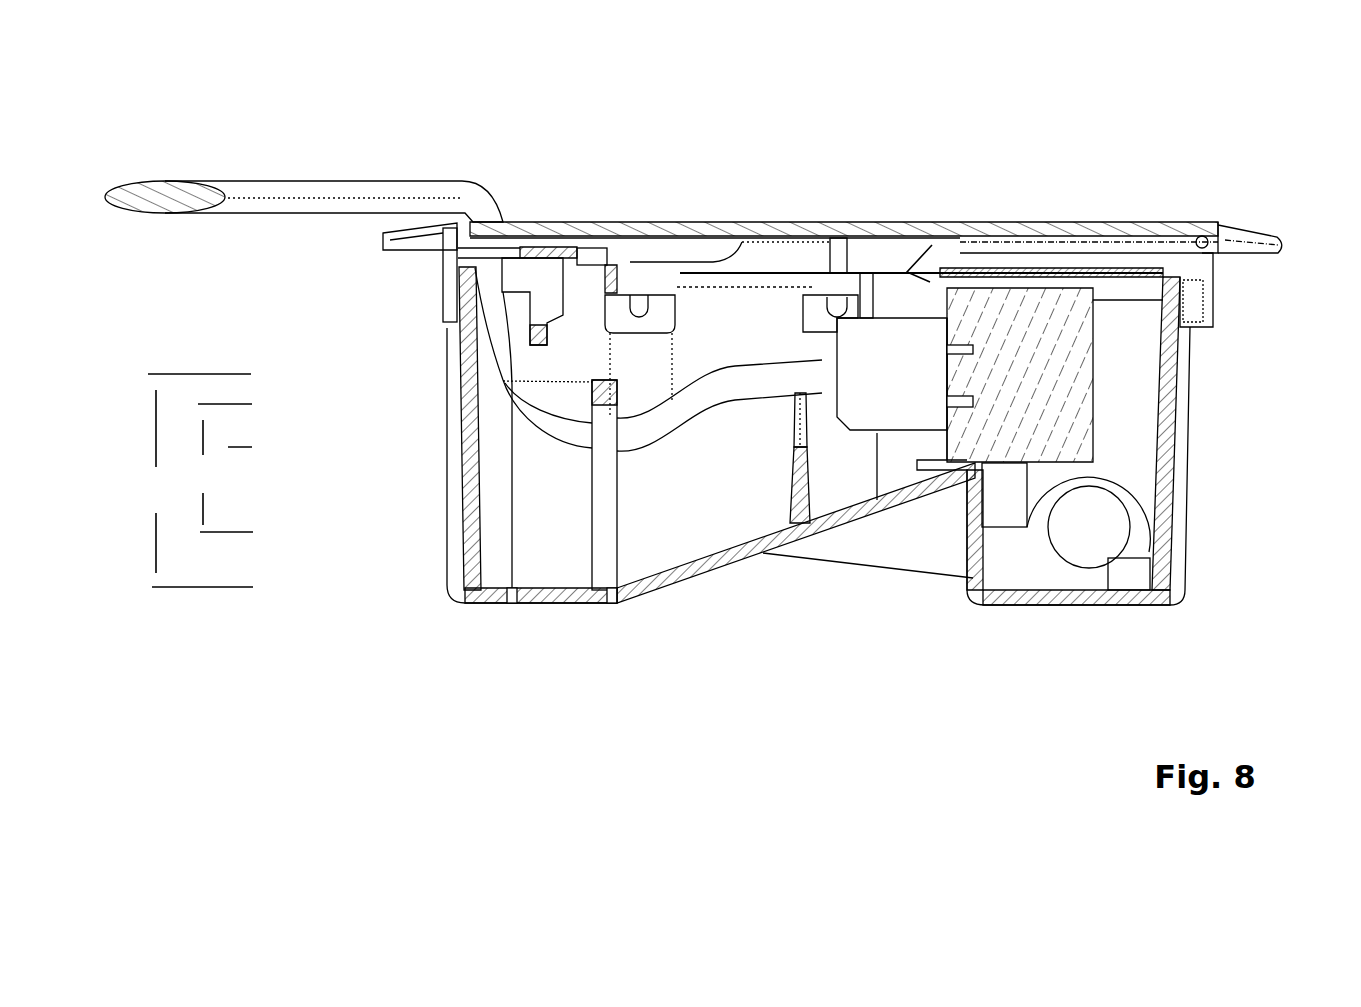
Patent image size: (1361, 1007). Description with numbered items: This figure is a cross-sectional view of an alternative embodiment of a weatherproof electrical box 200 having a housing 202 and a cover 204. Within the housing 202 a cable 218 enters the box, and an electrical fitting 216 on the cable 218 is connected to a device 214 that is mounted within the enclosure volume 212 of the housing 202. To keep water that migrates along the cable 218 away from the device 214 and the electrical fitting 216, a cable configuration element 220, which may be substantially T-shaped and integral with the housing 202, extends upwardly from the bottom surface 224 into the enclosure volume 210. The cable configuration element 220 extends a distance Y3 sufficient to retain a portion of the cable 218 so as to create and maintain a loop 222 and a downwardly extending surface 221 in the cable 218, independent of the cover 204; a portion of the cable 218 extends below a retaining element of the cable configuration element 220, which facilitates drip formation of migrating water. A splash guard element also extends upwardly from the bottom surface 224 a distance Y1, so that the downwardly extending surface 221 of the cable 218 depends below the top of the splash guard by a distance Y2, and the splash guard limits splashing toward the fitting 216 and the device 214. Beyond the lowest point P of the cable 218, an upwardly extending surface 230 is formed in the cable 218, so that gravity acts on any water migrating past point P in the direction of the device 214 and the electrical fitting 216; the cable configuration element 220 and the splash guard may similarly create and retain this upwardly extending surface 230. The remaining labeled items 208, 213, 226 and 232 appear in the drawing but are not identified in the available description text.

The electrical box 200 is at (770, 192).
The housing 202 is at (328, 605).
The cover 204 is at (955, 224).
The clip 208 is at (537, 305).
The enclosure volume 210 is at (716, 520).
The enclosure volume 212 is at (1130, 400).
The roller 213 is at (1110, 530).
The device 214 is at (1090, 432).
The electrical fitting 216 is at (853, 435).
The cable 218 is at (296, 180).
The cable configuration element 220 is at (592, 382).
The downwardly extending surface 221 is at (538, 420).
The loop 222 is at (548, 455).
The bottom surface 224 is at (553, 603).
The openings 226 is at (511, 623).
The upwardly extending surface 230 is at (748, 398).
The sloped plate 232 is at (890, 508).
The lowest point P is at (628, 465).
The distance Y1 is at (222, 497).
The distance Y2 is at (225, 429).
The distance Y3 is at (195, 480).